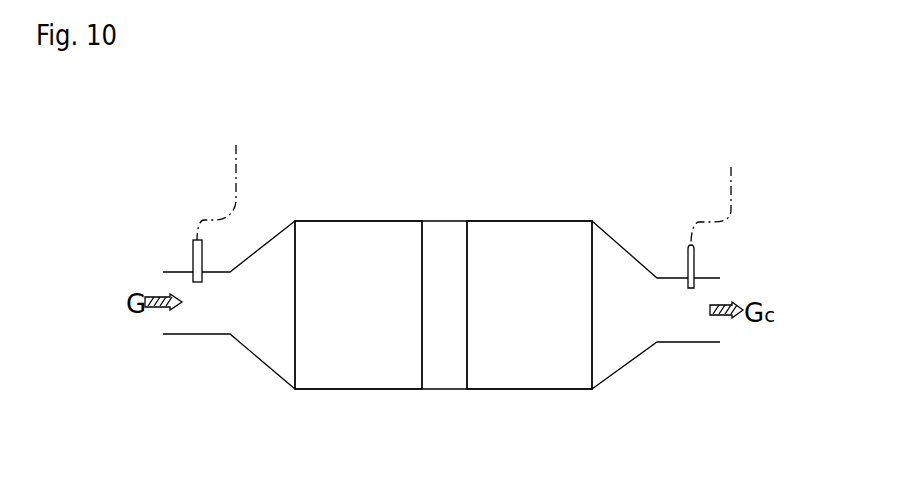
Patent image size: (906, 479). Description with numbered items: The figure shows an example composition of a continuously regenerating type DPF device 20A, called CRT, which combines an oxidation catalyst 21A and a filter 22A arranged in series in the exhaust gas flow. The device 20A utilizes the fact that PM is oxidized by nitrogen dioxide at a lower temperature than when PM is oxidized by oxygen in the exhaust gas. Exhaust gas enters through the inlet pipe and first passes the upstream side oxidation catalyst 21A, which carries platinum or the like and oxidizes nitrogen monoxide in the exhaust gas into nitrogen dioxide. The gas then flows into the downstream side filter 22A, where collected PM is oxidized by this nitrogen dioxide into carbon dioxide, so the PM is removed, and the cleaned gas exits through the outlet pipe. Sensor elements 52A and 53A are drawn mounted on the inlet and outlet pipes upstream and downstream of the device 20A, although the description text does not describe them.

The continuously regenerating type DPF device 20A is at (558, 178).
The oxidation catalyst 21A is at (398, 240).
The filter 22A is at (577, 242).
The upstream exhaust sensor 52A is at (195, 243).
The downstream exhaust sensor 53A is at (697, 260).